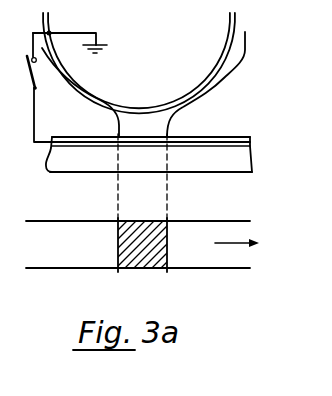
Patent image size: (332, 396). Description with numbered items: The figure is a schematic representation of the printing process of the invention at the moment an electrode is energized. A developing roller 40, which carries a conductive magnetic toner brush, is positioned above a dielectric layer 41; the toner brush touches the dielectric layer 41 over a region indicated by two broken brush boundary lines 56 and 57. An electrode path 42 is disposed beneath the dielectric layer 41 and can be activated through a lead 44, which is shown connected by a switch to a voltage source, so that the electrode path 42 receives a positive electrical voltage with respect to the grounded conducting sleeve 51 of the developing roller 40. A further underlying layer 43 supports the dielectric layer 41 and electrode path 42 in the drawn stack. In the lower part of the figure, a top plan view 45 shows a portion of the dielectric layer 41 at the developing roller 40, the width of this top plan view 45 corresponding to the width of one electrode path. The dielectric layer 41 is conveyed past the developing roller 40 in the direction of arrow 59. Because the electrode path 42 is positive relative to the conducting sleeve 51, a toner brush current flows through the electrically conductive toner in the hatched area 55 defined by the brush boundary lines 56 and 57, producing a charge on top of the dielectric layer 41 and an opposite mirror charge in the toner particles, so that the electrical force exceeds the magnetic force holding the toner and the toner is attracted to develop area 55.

The developing roller 40 is at (192, 57).
The dielectric layer 41 is at (226, 136).
The electrode path 42 is at (250, 143).
The substrate 43 is at (241, 160).
The lead 44 is at (33, 118).
The top plan view 45 is at (72, 296).
The conducting sleeve 51 is at (81, 82).
The area 55 is at (148, 246).
The brush boundary line 56 is at (118, 197).
The brush boundary line 57 is at (167, 197).
The arrow 59 is at (240, 242).